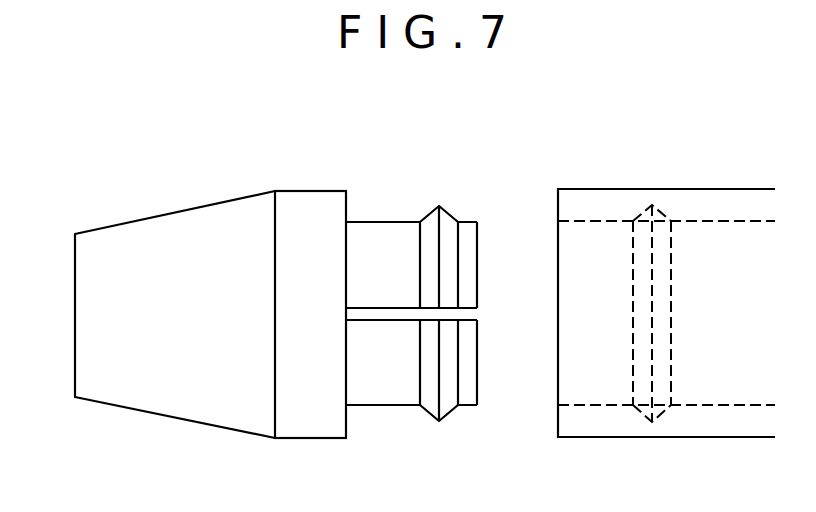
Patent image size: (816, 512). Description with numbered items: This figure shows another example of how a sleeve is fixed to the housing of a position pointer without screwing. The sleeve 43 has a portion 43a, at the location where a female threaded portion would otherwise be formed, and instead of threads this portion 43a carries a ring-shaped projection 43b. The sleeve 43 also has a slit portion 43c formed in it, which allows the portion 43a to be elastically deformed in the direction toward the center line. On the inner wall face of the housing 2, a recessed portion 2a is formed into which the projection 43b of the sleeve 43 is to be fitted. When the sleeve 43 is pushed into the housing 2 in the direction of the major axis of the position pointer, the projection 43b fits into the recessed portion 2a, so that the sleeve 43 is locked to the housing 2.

The housing 2 is at (724, 198).
The recessed portion 2a is at (659, 226).
The sleeve 43 is at (308, 190).
The portion 43a is at (381, 236).
The ring-shaped projection 43b is at (447, 224).
The slit portion 43c is at (470, 313).